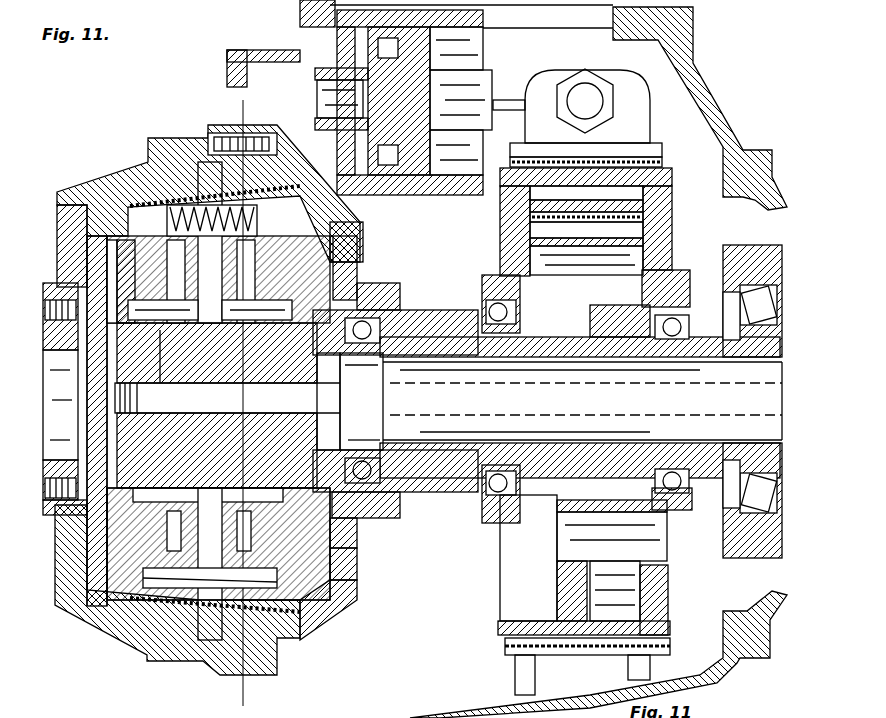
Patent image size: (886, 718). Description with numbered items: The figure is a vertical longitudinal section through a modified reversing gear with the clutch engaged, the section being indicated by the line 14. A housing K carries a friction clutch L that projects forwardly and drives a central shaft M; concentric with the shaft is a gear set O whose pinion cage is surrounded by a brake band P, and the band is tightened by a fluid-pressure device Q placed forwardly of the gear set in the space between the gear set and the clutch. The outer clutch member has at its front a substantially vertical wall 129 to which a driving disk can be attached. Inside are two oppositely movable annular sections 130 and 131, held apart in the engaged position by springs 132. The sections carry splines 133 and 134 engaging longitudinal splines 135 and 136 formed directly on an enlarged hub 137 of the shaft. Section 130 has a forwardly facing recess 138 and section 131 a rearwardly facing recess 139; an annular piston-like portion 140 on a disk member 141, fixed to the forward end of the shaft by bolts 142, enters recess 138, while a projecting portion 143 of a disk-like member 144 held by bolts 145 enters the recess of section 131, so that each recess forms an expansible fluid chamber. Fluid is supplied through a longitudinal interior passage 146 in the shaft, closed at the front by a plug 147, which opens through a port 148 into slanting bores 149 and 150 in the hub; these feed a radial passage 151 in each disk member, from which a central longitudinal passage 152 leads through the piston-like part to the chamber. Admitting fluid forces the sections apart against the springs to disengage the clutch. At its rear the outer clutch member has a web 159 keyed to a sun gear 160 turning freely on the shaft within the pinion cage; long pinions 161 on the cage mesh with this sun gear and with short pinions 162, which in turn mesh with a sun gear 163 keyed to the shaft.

The section line 14- 14 is at (238, 110).
The friction clutch L is at (140, 165).
The fluid-pressure device Q is at (470, 50).
The housing K is at (700, 75).
The brake band P is at (584, 118).
The gear set O is at (664, 212).
The central shaft M is at (582, 401).
The vertical wall 129 is at (70, 568).
The inner member or section 130 is at (125, 196).
The inner member or section 131 is at (345, 230).
The springs 132 is at (181, 225).
The splines 133 is at (112, 327).
The splines 134 is at (357, 281).
The longitudinal splines 135 is at (140, 352).
The longitudinal splines 136 is at (400, 289).
The hub 137 is at (110, 447).
The annular groove or recess 138 is at (165, 522).
The annular groove or recess 139 is at (318, 568).
The annular piston-like portion 140 is at (157, 522).
The member 141 is at (105, 500).
The bolts 142 is at (44, 488).
The projecting portion 143 is at (348, 552).
The disk-like member 144 is at (358, 530).
The bolts 145 is at (375, 500).
The longitudinal interior passage 146 is at (361, 401).
The plug 147 is at (118, 412).
The port 148 is at (190, 327).
The slanting bore 149 is at (165, 357).
The slanting bore 150 is at (257, 357).
The radial passage 151 is at (118, 292).
The central longitudinal passage 152 is at (124, 262).
The web 159 is at (360, 525).
The sun gear 160 is at (540, 500).
The long pinions 161 is at (642, 198).
The short pinions 162 is at (642, 606).
The sun gear 163 is at (665, 292).